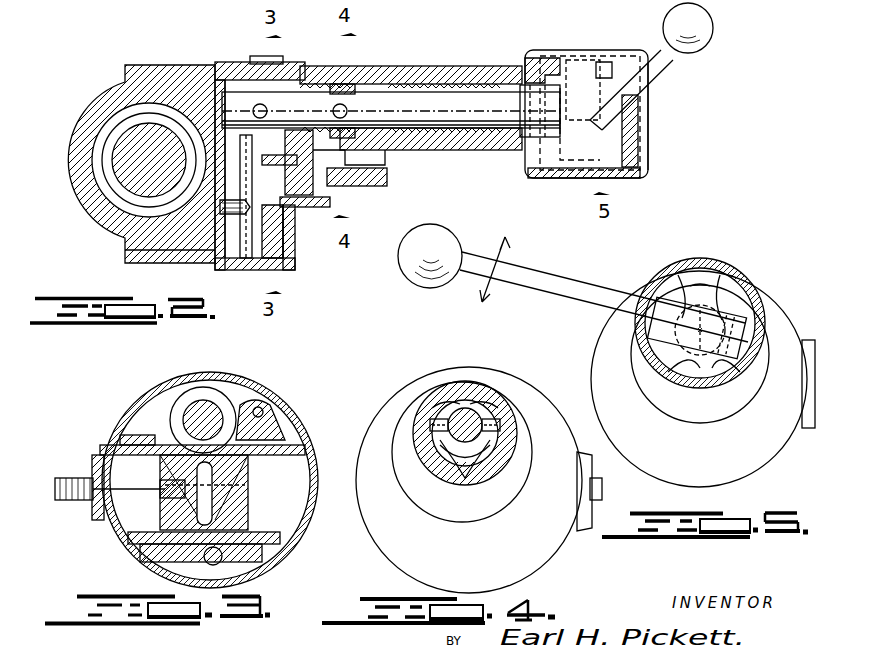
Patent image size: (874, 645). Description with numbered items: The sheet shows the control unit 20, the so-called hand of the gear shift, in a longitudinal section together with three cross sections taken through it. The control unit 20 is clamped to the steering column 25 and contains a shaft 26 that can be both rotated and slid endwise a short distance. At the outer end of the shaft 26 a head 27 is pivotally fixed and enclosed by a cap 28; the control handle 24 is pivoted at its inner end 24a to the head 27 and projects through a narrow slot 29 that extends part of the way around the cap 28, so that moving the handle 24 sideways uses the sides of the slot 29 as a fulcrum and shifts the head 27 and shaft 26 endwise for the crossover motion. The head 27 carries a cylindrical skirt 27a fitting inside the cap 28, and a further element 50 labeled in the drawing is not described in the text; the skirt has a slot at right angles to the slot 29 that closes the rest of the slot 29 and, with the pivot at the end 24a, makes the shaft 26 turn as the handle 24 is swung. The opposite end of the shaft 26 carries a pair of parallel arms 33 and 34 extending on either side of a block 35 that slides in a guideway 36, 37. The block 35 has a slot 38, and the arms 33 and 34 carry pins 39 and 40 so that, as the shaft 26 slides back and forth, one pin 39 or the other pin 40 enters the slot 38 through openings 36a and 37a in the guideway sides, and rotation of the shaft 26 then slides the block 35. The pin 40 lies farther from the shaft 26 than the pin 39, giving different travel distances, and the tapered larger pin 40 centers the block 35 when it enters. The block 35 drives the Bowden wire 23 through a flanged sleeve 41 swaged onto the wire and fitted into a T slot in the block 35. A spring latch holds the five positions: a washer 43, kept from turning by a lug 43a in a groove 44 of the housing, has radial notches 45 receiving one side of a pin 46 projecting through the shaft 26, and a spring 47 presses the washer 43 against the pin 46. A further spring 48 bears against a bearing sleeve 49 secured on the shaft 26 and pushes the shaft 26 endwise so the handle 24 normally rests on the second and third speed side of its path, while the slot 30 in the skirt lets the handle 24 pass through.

In FIG. 2, the control unit 20 is at (172, 70).
In FIG. 3, the control unit 20 is at (283, 415).
In FIG. 4, the control unit 20 is at (395, 405).
In FIG. 5, the control unit 20 is at (600, 335).
In FIG. 3, the Bowden wire 23 is at (58, 485).
In FIG. 2, the control handle 24 is at (658, 70).
In FIG. 5, the control handle 24 is at (548, 270).
In FIG. 5, the end of the handle 24a is at (748, 335).
In FIG. 2, the steering column 25 is at (114, 135).
In FIG. 2, the shaft 26 is at (455, 100).
In FIG. 3, the shaft 26 is at (205, 400).
In FIG. 4, the shaft 26 is at (466, 406).
In FIG. 5, the shaft 26 is at (665, 298).
In FIG. 2, the head 27 is at (556, 150).
In FIG. 4, the head 27 is at (600, 490).
In FIG. 5, the head 27 is at (730, 305).
In FIG. 2, the cylindrical skirt 27a is at (612, 140).
In FIG. 5, the cylindrical skirt 27a is at (715, 292).
In FIG. 2, the cap 28 is at (643, 150).
In FIG. 5, the cap 28 is at (705, 262).
In FIG. 2, the slot 29 is at (606, 62).
In FIG. 5, the slot 29 is at (648, 278).
In FIG. 5, the slot 30 is at (640, 300).
In FIG. 3, the arm 33 is at (152, 445).
In FIG. 2, the arm 34 is at (190, 263).
In FIG. 2, the slidable member or block 35 is at (330, 190).
In FIG. 3, the slidable member or block 35 is at (160, 470).
In FIG. 2, the guideway 36 is at (262, 262).
In FIG. 2, the slot or opening 36a is at (272, 255).
In FIG. 2, the guideway 37 is at (275, 228).
In FIG. 3, the guideway 37 is at (115, 518).
In FIG. 2, the slot or opening 37a is at (245, 70).
In FIG. 3, the slot or opening 37a is at (245, 476).
In FIG. 2, the slot 38 is at (283, 205).
In FIG. 3, the slot 38 is at (246, 503).
In FIG. 2, the pin 39 is at (320, 205).
In FIG. 3, the pin 39 is at (214, 490).
In FIG. 2, the pin 40 is at (240, 262).
In FIG. 3, the flanged sleeve 41 is at (152, 545).
In FIG. 2, the washer 43 is at (345, 84).
In FIG. 3, the washer 43 is at (238, 405).
In FIG. 4, the washer 43 is at (440, 385).
In FIG. 2, the lug 43a is at (320, 175).
In FIG. 4, the lug 43a is at (452, 465).
In FIG. 2, the groove 44 is at (362, 158).
In FIG. 4, the groove 44 is at (470, 470).
In FIG. 4, the radial notches or grooves 45 is at (505, 430).
In FIG. 2, the pin 46 is at (345, 108).
In FIG. 4, the pin 46 is at (498, 405).
In FIG. 2, the spring 47 is at (305, 85).
In FIG. 2, the spring 48 is at (432, 85).
In FIG. 2, the bearing sleeve 49 is at (525, 88).
In FIG. 2, the socket 50 is at (582, 66).